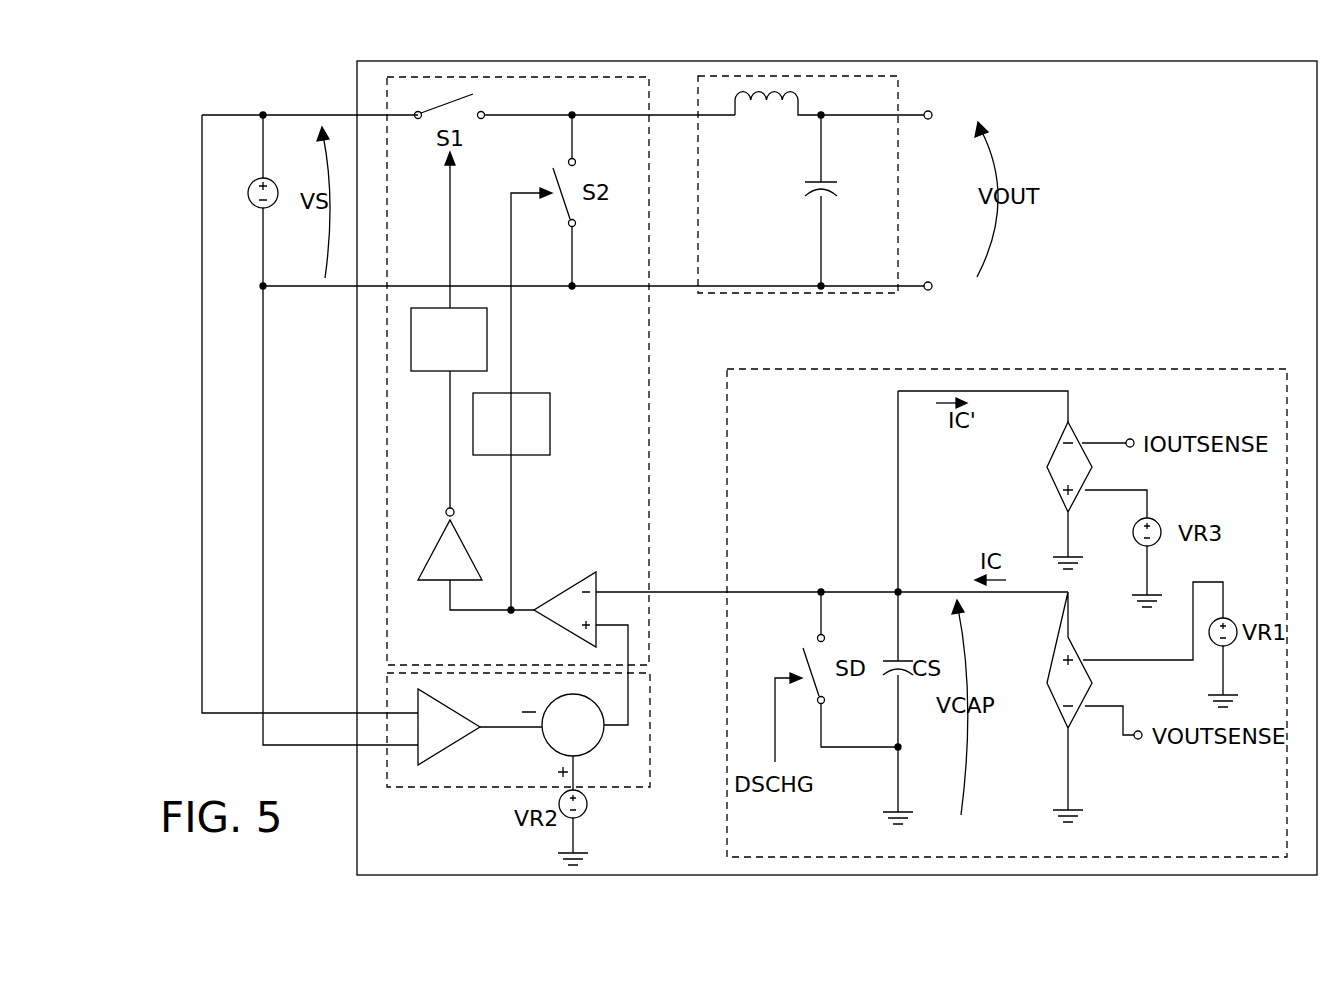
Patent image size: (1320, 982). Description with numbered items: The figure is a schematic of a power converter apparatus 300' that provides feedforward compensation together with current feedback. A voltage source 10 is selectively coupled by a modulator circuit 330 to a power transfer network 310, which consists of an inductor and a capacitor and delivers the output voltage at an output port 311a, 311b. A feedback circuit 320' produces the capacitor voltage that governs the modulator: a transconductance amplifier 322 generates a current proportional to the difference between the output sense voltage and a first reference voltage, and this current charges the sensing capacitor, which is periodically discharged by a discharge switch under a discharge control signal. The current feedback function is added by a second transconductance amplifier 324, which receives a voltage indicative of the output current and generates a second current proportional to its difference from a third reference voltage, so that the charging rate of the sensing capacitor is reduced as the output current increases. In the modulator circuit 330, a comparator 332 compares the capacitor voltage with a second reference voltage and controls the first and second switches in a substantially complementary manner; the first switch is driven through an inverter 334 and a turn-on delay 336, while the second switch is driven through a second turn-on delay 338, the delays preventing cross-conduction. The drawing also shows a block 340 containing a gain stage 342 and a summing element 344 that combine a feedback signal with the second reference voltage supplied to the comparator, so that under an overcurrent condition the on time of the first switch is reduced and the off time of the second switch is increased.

The voltage source 10 is at (253, 186).
The power converter apparatus 300' is at (797, 468).
The power transfer network 310 is at (797, 293).
The output port 311a is at (932, 105).
The output port 311b is at (932, 290).
The feedback circuit 320' is at (1007, 590).
The transconductance amplifier 322 is at (1048, 682).
The second transconductance amplifier 324 is at (1048, 463).
The modulator circuit 330 is at (648, 369).
The comparator 332 is at (550, 598).
The inverter 334 is at (445, 525).
The turn-on delay 336 is at (411, 338).
The second turn-on delay 338 is at (552, 422).
The error amplifier circuit 340 is at (517, 789).
The gain amplifier 342 is at (445, 750).
The summing element 344 is at (562, 694).